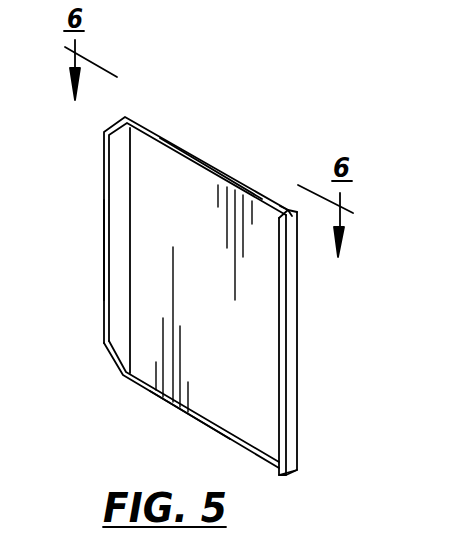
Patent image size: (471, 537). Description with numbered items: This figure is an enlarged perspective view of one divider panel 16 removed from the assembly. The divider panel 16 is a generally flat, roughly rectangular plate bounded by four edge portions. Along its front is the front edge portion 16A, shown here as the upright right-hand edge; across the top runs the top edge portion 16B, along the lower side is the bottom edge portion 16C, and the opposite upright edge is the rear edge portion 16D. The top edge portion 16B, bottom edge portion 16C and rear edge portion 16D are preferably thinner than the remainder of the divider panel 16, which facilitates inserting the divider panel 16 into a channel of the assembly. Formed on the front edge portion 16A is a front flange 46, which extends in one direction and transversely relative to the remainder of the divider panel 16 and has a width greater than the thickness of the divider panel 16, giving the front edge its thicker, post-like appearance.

The divider panel 16 is at (302, 413).
The front edge portion 16A is at (292, 212).
The top edge portion 16B is at (177, 147).
The bottom edge portion 16C is at (173, 403).
The rear edge portion 16D is at (110, 235).
The front flange 46 is at (287, 342).